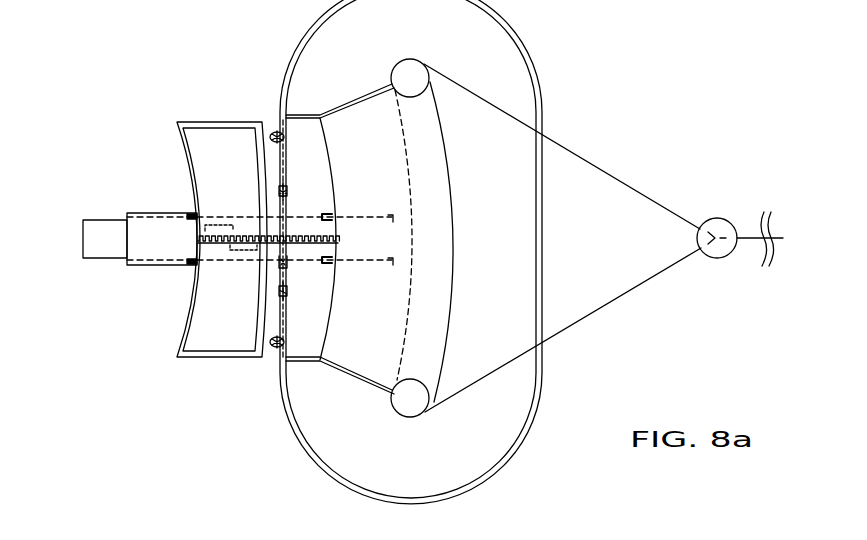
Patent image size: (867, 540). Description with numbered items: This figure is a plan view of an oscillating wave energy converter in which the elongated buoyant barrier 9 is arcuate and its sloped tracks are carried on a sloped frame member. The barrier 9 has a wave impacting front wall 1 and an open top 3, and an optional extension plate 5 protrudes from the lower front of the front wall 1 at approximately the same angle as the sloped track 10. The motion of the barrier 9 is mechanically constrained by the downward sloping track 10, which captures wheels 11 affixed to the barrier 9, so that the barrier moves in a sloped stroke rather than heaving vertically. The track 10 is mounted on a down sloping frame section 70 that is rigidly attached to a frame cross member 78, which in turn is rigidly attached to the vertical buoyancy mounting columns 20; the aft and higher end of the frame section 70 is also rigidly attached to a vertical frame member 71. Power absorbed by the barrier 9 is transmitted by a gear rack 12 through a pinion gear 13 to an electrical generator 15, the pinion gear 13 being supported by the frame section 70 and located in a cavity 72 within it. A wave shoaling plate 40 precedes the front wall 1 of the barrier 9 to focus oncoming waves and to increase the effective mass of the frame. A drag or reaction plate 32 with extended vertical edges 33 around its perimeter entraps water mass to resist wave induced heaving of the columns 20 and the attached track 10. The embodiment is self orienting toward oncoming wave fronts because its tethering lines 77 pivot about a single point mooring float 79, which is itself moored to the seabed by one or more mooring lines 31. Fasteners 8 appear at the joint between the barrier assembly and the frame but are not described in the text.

The front wall 1 is at (269, 125).
The top of the floating barrier 3 is at (215, 121).
The extension plate 5 is at (312, 313).
The fastener 8 is at (285, 139).
The elongated buoyant barrier 9 is at (205, 160).
The sloped track 10 is at (143, 214).
The wheels 11 is at (184, 264).
The gear rack 12 is at (303, 234).
The pinion gear 13 is at (241, 232).
The electrical generator 15 is at (213, 222).
The vertical buoyancy mounting column 20 is at (410, 58).
The mooring line 31 is at (748, 236).
The drag plate 32 is at (497, 443).
The extended vertical edges 33 is at (312, 458).
The wave shoaling plate 40 is at (376, 134).
The down sloping frame section 70 is at (393, 215).
The vertical frame member 71 is at (83, 240).
The cavity 72 is at (242, 250).
The tethering lines 77 is at (600, 168).
The frame cross member 78 is at (442, 312).
The single point mooring float 79 is at (718, 218).